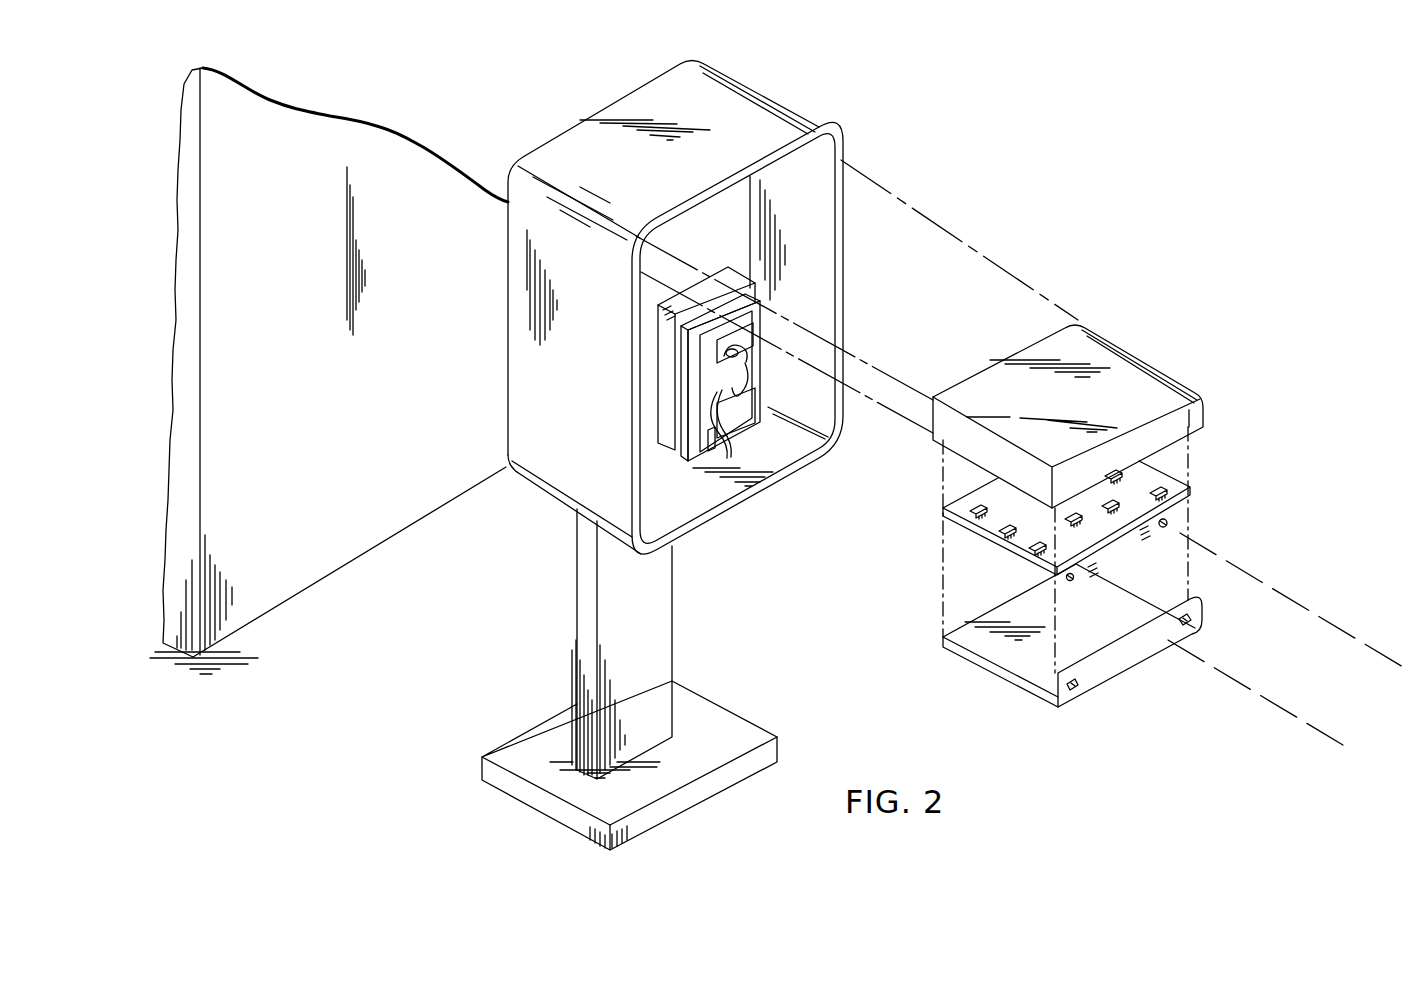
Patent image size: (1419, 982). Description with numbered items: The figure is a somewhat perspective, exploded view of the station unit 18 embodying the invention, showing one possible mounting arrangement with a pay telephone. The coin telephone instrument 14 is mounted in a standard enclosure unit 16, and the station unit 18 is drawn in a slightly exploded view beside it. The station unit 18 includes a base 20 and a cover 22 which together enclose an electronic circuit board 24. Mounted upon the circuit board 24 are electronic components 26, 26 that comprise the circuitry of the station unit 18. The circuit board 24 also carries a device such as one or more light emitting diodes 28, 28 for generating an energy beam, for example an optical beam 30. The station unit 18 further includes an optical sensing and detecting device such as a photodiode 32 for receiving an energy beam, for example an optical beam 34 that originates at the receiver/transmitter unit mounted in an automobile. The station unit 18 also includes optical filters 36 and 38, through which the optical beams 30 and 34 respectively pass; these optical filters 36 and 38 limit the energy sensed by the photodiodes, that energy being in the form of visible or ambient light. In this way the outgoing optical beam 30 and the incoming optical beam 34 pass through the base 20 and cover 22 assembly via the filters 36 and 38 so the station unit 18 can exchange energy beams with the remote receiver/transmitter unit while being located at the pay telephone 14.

The coin telephone instrument 14 is at (673, 441).
The enclosure unit 16 is at (778, 100).
The station unit 18 is at (1138, 350).
The base 20 is at (1038, 682).
The cover 22 is at (1188, 385).
The electronic circuit board 24 is at (1186, 487).
The electronic components 26 is at (1002, 530).
The light emitting diodes 28 is at (1168, 524).
The optical beam 30 is at (1268, 585).
The photodiode 32 is at (1070, 582).
The optical beam 34 is at (1203, 653).
The optical filter 36 is at (1193, 621).
The optical filter 38 is at (1073, 691).